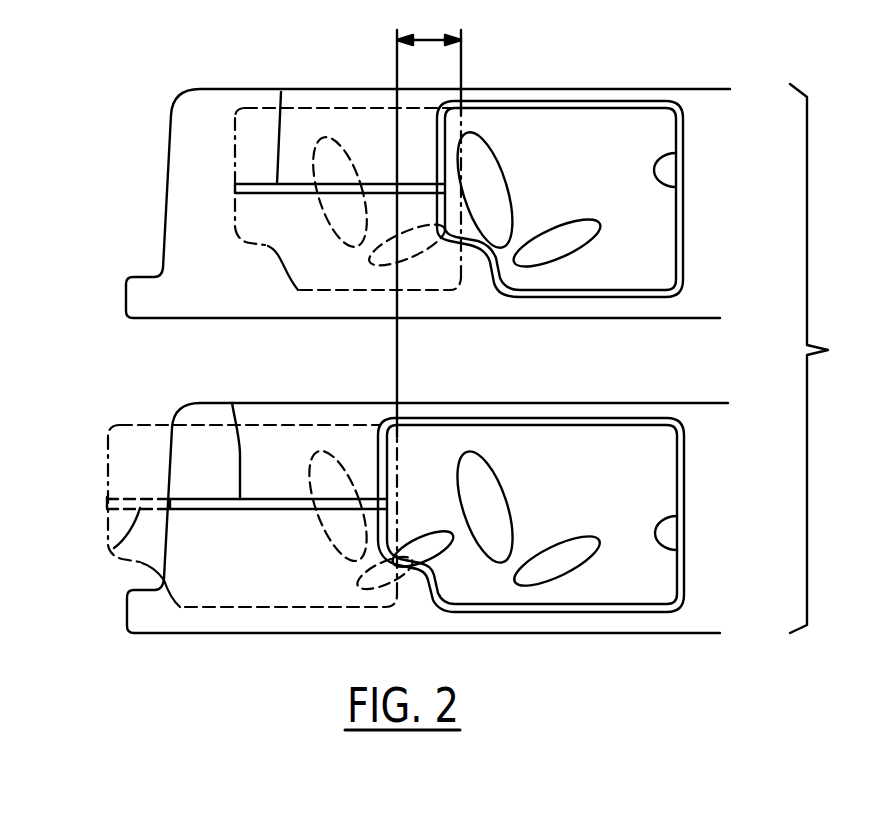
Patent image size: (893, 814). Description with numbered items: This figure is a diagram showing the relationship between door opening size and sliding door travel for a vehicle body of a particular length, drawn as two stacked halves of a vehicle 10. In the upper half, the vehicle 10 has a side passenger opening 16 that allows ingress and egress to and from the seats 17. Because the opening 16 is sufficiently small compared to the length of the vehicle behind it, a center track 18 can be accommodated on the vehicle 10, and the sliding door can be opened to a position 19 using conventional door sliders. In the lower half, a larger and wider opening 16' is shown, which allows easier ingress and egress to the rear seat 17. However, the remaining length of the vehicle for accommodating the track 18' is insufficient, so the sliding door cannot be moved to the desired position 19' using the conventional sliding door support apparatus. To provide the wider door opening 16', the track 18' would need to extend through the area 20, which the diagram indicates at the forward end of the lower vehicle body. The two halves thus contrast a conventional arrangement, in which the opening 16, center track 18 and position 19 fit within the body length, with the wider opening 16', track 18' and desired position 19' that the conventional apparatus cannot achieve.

The vehicle 10 is at (668, 68).
The side passenger opening 16 is at (609, 199).
The larger side passenger opening 16' is at (562, 515).
The seats 17 is at (347, 164).
The center track 18 is at (340, 111).
The track 18' is at (247, 438).
The position 19 is at (348, 157).
The desired position 19' is at (252, 487).
The area 20 is at (112, 551).